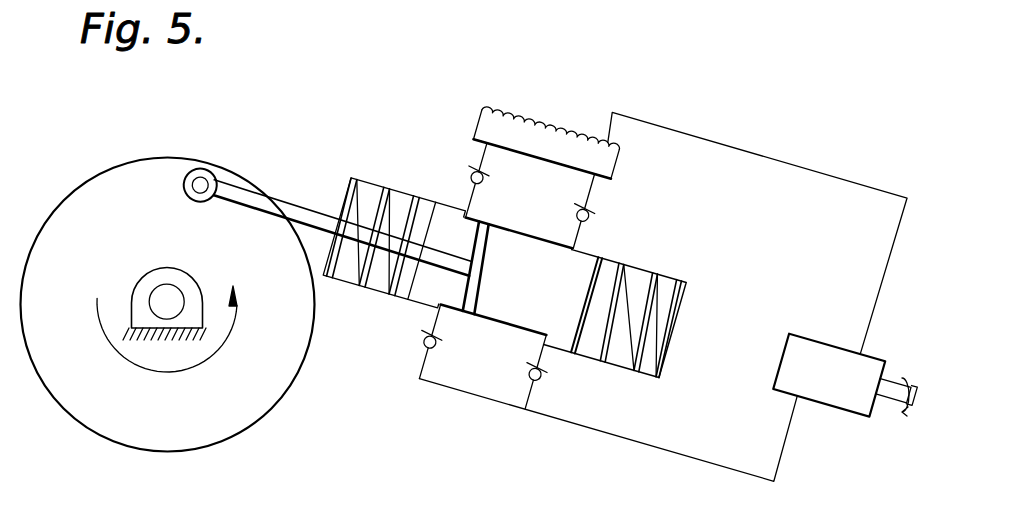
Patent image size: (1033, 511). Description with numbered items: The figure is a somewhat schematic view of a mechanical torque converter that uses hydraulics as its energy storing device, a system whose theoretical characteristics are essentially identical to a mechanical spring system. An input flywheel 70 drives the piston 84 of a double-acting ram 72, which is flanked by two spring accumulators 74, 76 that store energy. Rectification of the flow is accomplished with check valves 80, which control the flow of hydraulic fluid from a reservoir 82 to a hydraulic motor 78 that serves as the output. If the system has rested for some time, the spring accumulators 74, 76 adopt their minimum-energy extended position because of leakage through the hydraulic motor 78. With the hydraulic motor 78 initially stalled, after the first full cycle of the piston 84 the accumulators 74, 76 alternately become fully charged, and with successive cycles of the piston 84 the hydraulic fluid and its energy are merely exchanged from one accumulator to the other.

The input flywheel 70 is at (263, 405).
The double-acting ram 72 is at (500, 232).
The spring accumulator 74 is at (377, 178).
The spring accumulator 76 is at (632, 372).
The hydraulic motor 78 is at (855, 408).
The check valves 80 is at (476, 172).
The reservoir 82 is at (482, 123).
The piston 84 is at (489, 291).